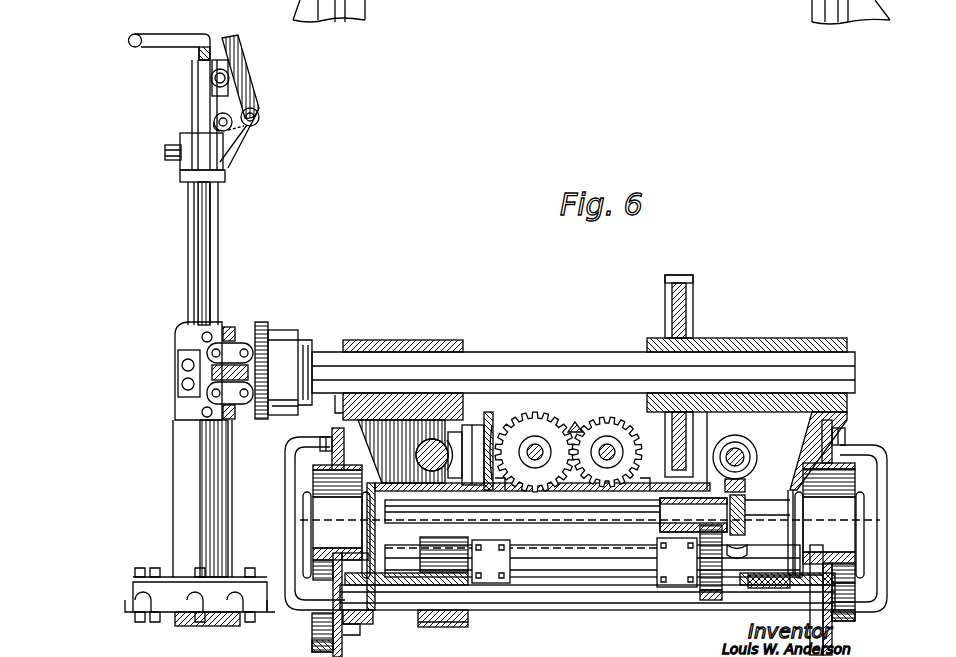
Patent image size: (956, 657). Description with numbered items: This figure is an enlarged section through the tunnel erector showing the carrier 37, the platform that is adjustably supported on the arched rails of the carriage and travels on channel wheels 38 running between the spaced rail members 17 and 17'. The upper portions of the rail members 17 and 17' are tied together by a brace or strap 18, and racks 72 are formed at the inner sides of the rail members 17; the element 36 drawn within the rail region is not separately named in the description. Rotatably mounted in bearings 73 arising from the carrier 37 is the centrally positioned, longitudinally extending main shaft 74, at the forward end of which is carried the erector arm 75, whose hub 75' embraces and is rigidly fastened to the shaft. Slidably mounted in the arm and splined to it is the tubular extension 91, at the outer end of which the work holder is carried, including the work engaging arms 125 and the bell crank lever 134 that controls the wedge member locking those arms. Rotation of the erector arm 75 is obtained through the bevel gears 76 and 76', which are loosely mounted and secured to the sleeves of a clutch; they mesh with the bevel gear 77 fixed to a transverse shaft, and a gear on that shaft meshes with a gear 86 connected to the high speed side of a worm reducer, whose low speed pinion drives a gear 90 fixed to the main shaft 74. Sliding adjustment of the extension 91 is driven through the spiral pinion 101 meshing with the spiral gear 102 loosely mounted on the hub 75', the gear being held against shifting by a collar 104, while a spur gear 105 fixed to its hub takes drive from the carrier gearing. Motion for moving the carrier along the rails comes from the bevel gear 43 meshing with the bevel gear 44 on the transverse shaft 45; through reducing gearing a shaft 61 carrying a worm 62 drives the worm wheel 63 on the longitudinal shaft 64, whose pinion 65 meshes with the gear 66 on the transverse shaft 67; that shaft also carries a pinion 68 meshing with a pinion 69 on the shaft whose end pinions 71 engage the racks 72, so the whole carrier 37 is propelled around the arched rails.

The work engaging arm 125 is at (165, 34).
The bell crank lever 134 is at (248, 76).
The tubular extension 91 is at (219, 223).
The spiral gear 102 is at (235, 328).
The spiral pinion 101 is at (240, 348).
The collar 104 is at (296, 332).
The spur gear 105 is at (288, 340).
The hub 75' is at (316, 359).
The erector arm 75 is at (200, 523).
The main shaft 74 is at (565, 348).
The bearing 73 is at (422, 340).
The pinion 65 is at (508, 393).
The gear 90 is at (695, 289).
The shaft 45 is at (416, 450).
The bevel gear 43 is at (462, 430).
The bevel gear 44 is at (455, 492).
The bevel gear 76 is at (553, 444).
The bevel gear 76' is at (505, 438).
The bevel gear 77 is at (556, 425).
The gear 86 is at (624, 425).
The shaft 61 is at (728, 445).
The worm 62 is at (752, 450).
The worm wheel 63 is at (752, 486).
The carrier 37 is at (540, 523).
The shaft 67 is at (582, 562).
The pinion 68 is at (452, 537).
The shaft 64 is at (660, 510).
The gear 66 is at (712, 590).
The channel wheel 38 is at (772, 550).
The pinion 71 is at (363, 622).
The pinion 69 is at (442, 627).
The brace 18 is at (297, 447).
The rail member 17' is at (602, 438).
The drum 36 is at (325, 508).
The rail member 17 is at (571, 578).
The rack 72 is at (348, 555).